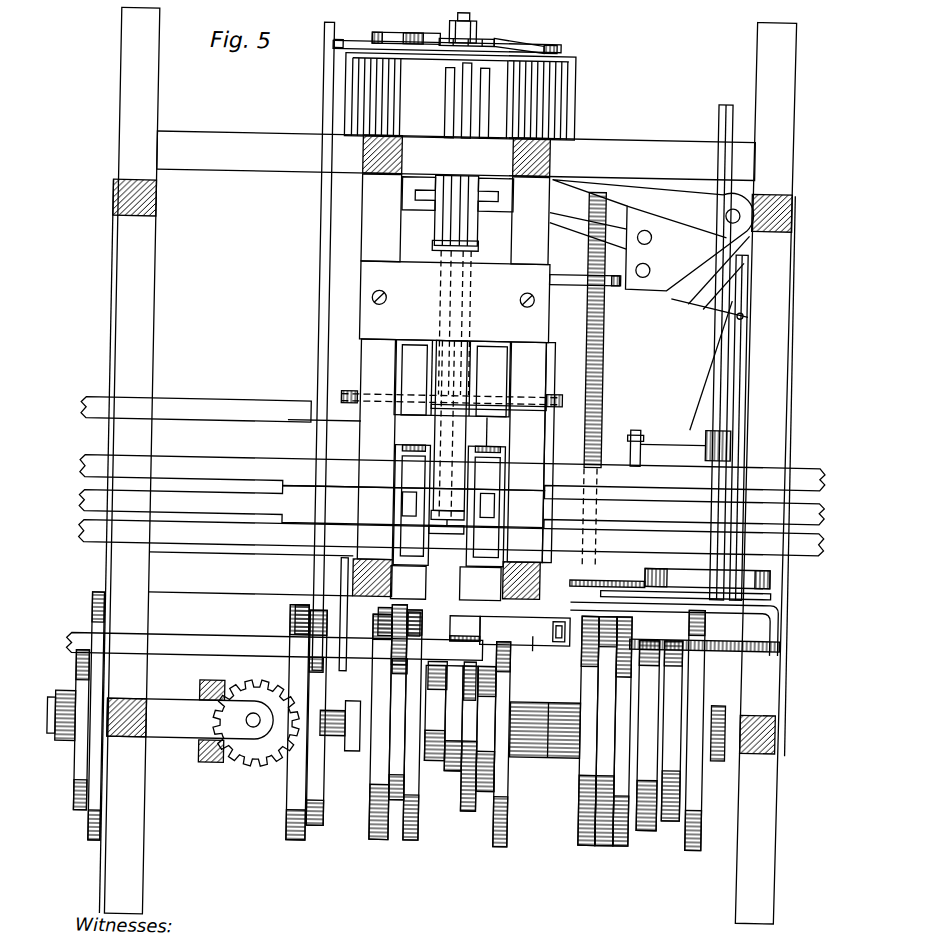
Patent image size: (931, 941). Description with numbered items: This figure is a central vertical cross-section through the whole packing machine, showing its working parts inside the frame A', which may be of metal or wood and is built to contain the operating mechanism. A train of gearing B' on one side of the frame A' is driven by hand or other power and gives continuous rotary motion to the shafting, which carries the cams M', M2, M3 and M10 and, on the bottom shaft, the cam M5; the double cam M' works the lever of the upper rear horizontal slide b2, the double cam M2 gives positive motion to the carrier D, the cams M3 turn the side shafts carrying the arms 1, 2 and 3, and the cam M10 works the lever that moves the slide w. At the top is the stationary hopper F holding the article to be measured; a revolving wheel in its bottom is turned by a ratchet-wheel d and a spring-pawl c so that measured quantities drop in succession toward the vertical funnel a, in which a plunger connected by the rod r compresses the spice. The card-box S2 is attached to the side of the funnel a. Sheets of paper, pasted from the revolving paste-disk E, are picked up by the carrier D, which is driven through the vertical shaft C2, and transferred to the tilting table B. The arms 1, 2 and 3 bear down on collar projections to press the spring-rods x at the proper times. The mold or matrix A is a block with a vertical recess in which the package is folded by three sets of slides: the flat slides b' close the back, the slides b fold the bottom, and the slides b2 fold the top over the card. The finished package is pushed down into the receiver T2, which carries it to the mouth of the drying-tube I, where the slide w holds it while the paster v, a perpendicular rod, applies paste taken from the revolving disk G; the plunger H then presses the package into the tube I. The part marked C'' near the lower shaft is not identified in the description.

The frame A' is at (448, 466).
The spring-pawl c is at (380, 34).
The ratchet-wheel d is at (488, 40).
The hopper F is at (460, 96).
The mold or matrix A is at (354, 386).
The rod r is at (455, 285).
The carrier D is at (472, 370).
The card-box S2 is at (452, 387).
The paste-disk E is at (497, 392).
The funnel a is at (450, 430).
The tilting table B is at (449, 490).
The spring-rod x is at (447, 521).
The paster v is at (601, 397).
The arm 3 is at (651, 306).
The arm 1 is at (588, 229).
The arm 2 is at (588, 241).
The vertical shaft C2 is at (221, 399).
The top slides b2 is at (452, 474).
The flat slides b' is at (452, 507).
The bottom slides b is at (450, 542).
The revolving disk G is at (680, 581).
The plunger H is at (675, 622).
The slide w is at (550, 610).
The drying-tube I is at (531, 652).
The receiver T2 is at (453, 629).
The train of gearing B' is at (74, 728).
The cam M5 is at (422, 776).
The double cam M' is at (466, 758).
The cam M10 is at (593, 750).
The double cam M2 is at (629, 743).
The cams M3 is at (638, 844).
The bearing block C'' is at (743, 758).